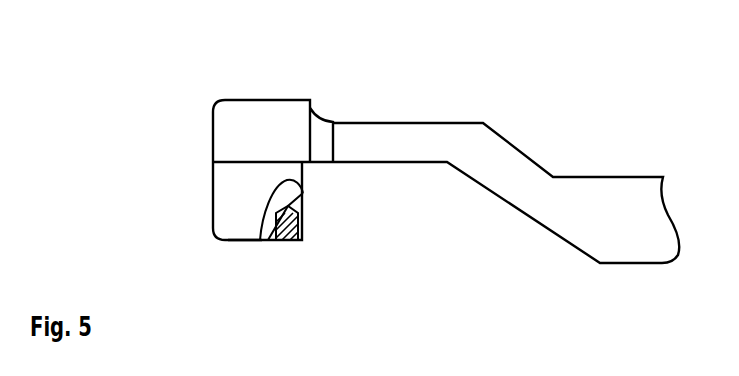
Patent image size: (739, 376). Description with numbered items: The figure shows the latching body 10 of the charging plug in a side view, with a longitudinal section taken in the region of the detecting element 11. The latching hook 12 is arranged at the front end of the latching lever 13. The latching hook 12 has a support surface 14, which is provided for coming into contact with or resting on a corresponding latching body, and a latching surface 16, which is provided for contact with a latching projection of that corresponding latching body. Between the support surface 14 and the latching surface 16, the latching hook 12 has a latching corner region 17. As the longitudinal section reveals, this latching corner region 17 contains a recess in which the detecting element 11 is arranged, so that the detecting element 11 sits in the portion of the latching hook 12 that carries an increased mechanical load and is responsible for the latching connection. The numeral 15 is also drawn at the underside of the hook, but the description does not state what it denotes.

The latching body 10 is at (261, 44).
The detecting element 11 is at (287, 241).
The latching hook 12 is at (240, 198).
The latching lever 13 is at (485, 142).
The support surface 14 is at (275, 237).
The bottom surface 15 is at (243, 241).
The latching surface 16 is at (303, 195).
The latching corner region 17 is at (307, 242).